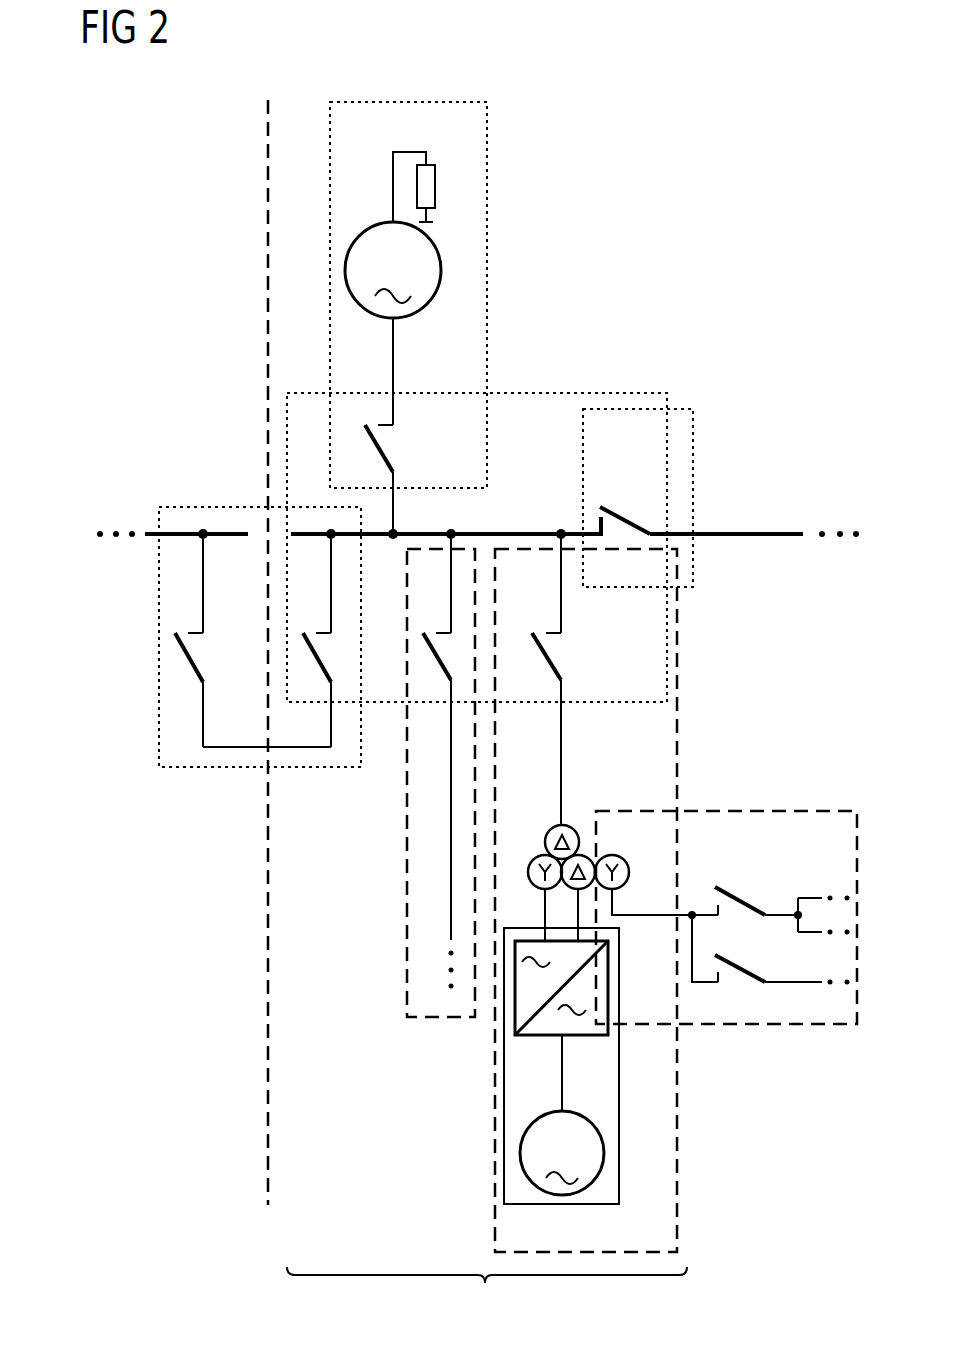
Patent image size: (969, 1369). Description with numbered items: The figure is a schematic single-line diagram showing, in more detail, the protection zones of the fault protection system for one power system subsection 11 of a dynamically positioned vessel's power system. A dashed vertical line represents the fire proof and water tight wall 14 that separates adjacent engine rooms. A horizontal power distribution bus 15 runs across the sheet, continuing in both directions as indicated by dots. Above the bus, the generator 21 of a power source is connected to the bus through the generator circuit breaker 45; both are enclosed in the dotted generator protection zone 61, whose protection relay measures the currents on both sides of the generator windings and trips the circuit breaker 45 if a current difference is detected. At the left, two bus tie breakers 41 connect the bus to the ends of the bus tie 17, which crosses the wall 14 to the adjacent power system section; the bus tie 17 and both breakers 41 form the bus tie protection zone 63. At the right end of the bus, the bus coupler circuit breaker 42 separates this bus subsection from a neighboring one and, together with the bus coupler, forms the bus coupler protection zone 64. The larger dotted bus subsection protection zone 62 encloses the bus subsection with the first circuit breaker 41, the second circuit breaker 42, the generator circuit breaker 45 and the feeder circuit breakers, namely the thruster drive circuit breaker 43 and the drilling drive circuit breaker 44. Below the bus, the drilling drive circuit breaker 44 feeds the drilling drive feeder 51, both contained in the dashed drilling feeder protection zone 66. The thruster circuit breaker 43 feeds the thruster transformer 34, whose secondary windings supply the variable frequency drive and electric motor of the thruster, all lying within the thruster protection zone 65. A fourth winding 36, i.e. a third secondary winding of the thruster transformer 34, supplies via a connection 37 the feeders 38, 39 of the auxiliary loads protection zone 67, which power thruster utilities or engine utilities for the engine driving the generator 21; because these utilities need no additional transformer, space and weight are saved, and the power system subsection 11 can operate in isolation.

The power system subsection 11 is at (487, 1293).
The fire proof and water tight wall 14 is at (270, 1125).
The power distribution bus 15 is at (95, 510).
The bus tie 17 is at (227, 748).
The generator 21 is at (386, 225).
The thruster transformer 34 is at (598, 857).
The fourth winding 36 is at (625, 858).
The connecting line 37 is at (643, 913).
The feeder 38 is at (815, 916).
The feeder 39 is at (808, 977).
The bus tie breaker 41 is at (182, 650).
The bus coupler circuit breaker 42 is at (620, 516).
The thruster drive circuit breaker 43 is at (557, 660).
The drilling drive circuit breaker 44 is at (438, 662).
The generator circuit breaker 45 is at (397, 457).
The drilling drive feeder 51 is at (451, 902).
The generator protection zone 61 is at (465, 101).
The bus subsection protection zone 62 is at (617, 392).
The bus tie protection zone 63 is at (159, 596).
The bus coupler protection zone 64 is at (693, 440).
The thruster protection zone 65 is at (495, 1188).
The drilling feeder protection zone 66 is at (438, 1018).
The auxiliary loads protection zone 67 is at (787, 1025).